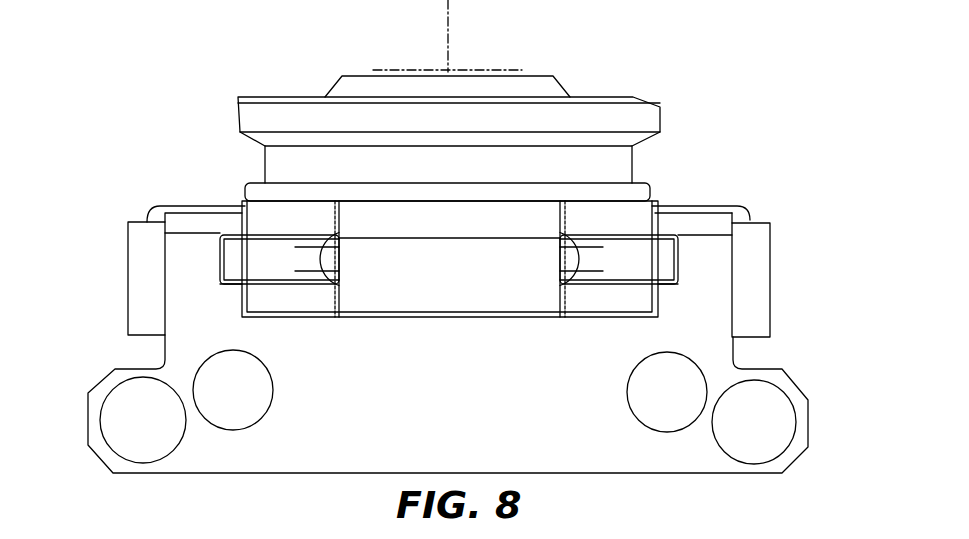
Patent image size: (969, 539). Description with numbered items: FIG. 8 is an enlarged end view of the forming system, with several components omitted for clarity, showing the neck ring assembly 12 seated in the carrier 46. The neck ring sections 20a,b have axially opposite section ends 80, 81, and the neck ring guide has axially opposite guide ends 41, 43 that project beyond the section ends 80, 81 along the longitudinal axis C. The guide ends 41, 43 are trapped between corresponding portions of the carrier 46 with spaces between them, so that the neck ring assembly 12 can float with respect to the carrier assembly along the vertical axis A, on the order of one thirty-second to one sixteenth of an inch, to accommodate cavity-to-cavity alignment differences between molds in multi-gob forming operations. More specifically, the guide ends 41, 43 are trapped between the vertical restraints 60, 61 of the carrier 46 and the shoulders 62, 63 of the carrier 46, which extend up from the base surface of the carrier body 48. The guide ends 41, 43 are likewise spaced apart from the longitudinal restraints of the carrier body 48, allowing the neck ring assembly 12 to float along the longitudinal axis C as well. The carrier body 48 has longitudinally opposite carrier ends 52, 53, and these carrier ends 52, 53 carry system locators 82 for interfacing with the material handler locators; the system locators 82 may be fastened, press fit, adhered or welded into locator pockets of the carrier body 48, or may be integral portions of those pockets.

The vertical axis A is at (450, 14).
The longitudinal axis C is at (488, 70).
The neck ring sections 20a,b is at (596, 60).
The neck ring assembly 12 is at (745, 94).
The carrier 46 is at (752, 196).
The vertical restraint 60 is at (242, 206).
The vertical restraint 61 is at (681, 207).
The section end 80 is at (243, 228).
The section end 81 is at (657, 235).
The guide end 41 is at (220, 250).
The guide end 43 is at (680, 275).
The system locator 82 is at (108, 291).
The shoulder 62 is at (238, 285).
The shoulder 63 is at (661, 287).
The carrier end 52 is at (124, 348).
The carrier end 53 is at (775, 354).
The carrier body 48 is at (708, 498).